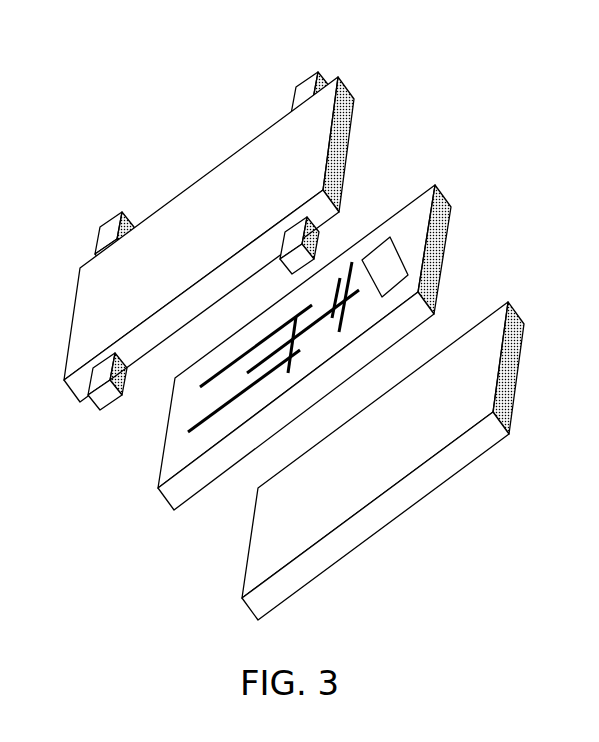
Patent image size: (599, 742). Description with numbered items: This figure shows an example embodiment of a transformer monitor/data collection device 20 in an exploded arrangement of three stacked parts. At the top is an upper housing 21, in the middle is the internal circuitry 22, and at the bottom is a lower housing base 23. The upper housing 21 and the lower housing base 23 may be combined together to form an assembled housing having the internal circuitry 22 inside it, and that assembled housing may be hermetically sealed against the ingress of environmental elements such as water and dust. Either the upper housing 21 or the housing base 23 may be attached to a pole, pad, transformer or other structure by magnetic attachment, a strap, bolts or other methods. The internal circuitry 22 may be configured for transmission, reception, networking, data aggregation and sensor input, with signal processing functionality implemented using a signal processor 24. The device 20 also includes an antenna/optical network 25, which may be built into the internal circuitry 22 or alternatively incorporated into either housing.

The transformer monitor/data collection device 20 is at (233, 134).
The upper housing 21 is at (170, 203).
The internal circuitry 22 is at (157, 445).
The lower housing base 23 is at (240, 547).
The signal processor 24 is at (402, 245).
The antenna/optical network 25 is at (363, 258).